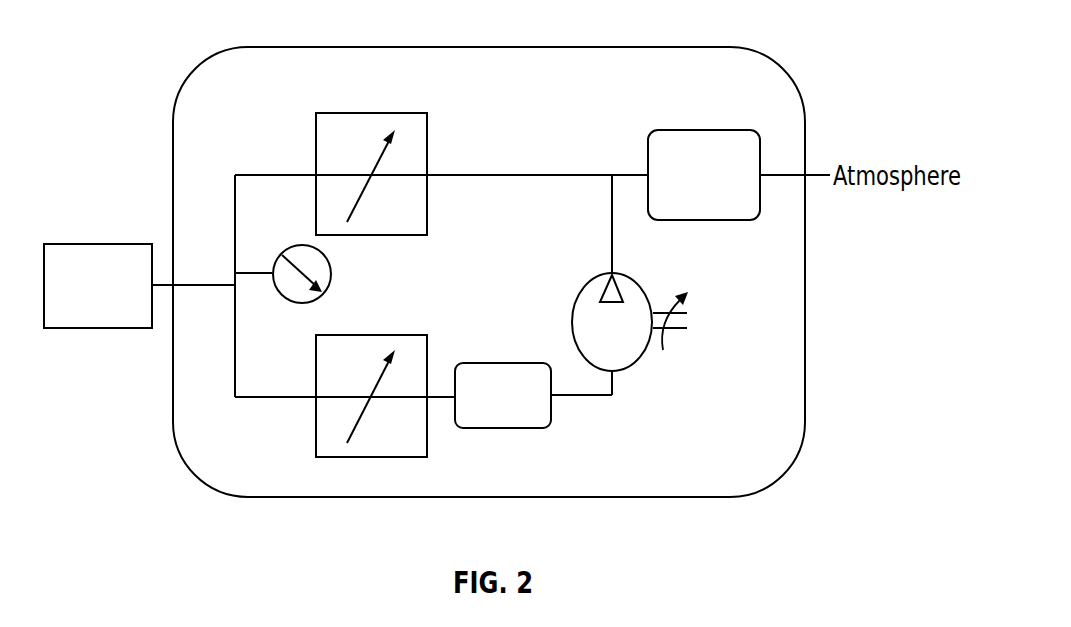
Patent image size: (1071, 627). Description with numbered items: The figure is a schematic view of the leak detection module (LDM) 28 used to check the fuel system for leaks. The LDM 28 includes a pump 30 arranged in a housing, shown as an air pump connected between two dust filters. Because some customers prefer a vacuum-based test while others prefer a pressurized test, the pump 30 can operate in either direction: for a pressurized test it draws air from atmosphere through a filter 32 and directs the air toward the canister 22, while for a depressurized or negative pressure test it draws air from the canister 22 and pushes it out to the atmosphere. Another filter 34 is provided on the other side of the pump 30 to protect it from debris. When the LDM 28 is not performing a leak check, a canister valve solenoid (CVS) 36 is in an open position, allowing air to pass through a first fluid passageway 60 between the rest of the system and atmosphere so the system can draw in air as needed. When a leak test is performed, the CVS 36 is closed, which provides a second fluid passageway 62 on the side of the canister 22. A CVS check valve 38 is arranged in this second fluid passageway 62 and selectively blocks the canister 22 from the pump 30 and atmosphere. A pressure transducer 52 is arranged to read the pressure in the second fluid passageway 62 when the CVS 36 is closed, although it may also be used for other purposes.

The leak detection module 28 is at (676, 30).
The canister 22 is at (83, 299).
The pump 30 is at (637, 362).
The filter 32 is at (703, 130).
The filter 34 is at (500, 363).
The canister valve solenoid (CVS) 36 is at (427, 128).
The CVS check valve 38 is at (427, 433).
The pressure transducer 52 is at (293, 303).
The first fluid passageway 60 is at (515, 166).
The second fluid passageway 62 is at (272, 415).